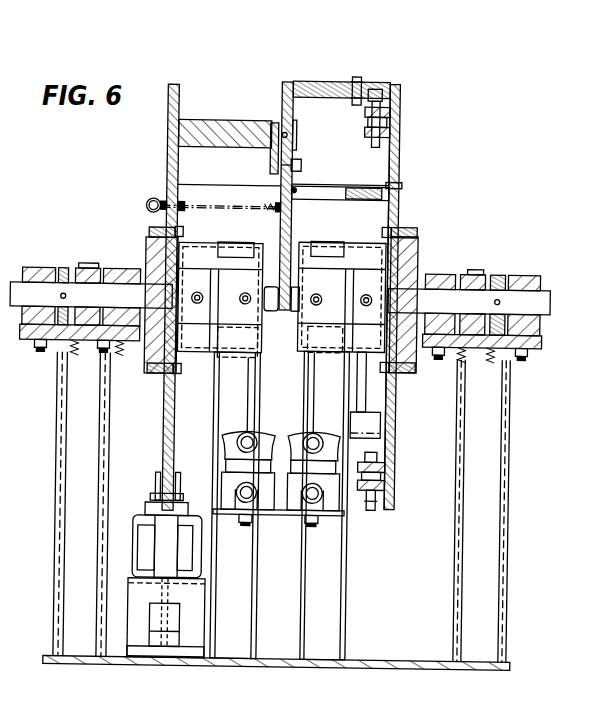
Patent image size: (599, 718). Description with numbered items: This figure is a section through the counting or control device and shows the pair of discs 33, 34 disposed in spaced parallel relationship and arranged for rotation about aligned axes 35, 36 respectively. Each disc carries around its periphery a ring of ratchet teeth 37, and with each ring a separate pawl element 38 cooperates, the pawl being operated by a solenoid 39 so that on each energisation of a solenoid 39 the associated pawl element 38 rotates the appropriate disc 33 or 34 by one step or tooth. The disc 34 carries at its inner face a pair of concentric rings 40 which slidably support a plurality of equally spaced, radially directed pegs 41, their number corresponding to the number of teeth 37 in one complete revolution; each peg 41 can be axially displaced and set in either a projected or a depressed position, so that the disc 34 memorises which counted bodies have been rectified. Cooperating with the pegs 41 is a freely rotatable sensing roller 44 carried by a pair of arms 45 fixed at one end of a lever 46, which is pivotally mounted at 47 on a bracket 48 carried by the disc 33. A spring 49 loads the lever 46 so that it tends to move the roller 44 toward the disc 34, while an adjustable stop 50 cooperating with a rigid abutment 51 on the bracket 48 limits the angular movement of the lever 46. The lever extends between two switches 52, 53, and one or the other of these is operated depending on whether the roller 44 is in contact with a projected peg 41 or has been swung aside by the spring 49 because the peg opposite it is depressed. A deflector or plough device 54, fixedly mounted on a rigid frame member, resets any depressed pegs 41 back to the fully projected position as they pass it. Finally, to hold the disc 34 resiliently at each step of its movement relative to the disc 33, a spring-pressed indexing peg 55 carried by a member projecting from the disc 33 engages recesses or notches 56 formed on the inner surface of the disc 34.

The disc 33 is at (165, 128).
The disc 34 is at (396, 139).
The axis 35 is at (84, 298).
The axis 36 is at (442, 304).
The ratchet teeth 37 is at (171, 87).
The pawl element 38 is at (180, 480).
The solenoid 39 is at (192, 550).
The concentric rings 40 is at (364, 112).
The pegs 41 is at (376, 89).
The sensing roller 44 is at (353, 78).
The arms 45 is at (308, 81).
The lever 46 is at (292, 192).
The pivot 47 is at (279, 133).
The bracket 48 is at (221, 121).
The spring 49 is at (172, 202).
The adjustable stop 50 is at (297, 162).
The rigid abutment 51 is at (265, 150).
The switch 52 is at (262, 354).
The switch 53 is at (296, 352).
The deflector 54 is at (366, 410).
The indexing peg 55 is at (395, 183).
The notches 56 is at (396, 191).